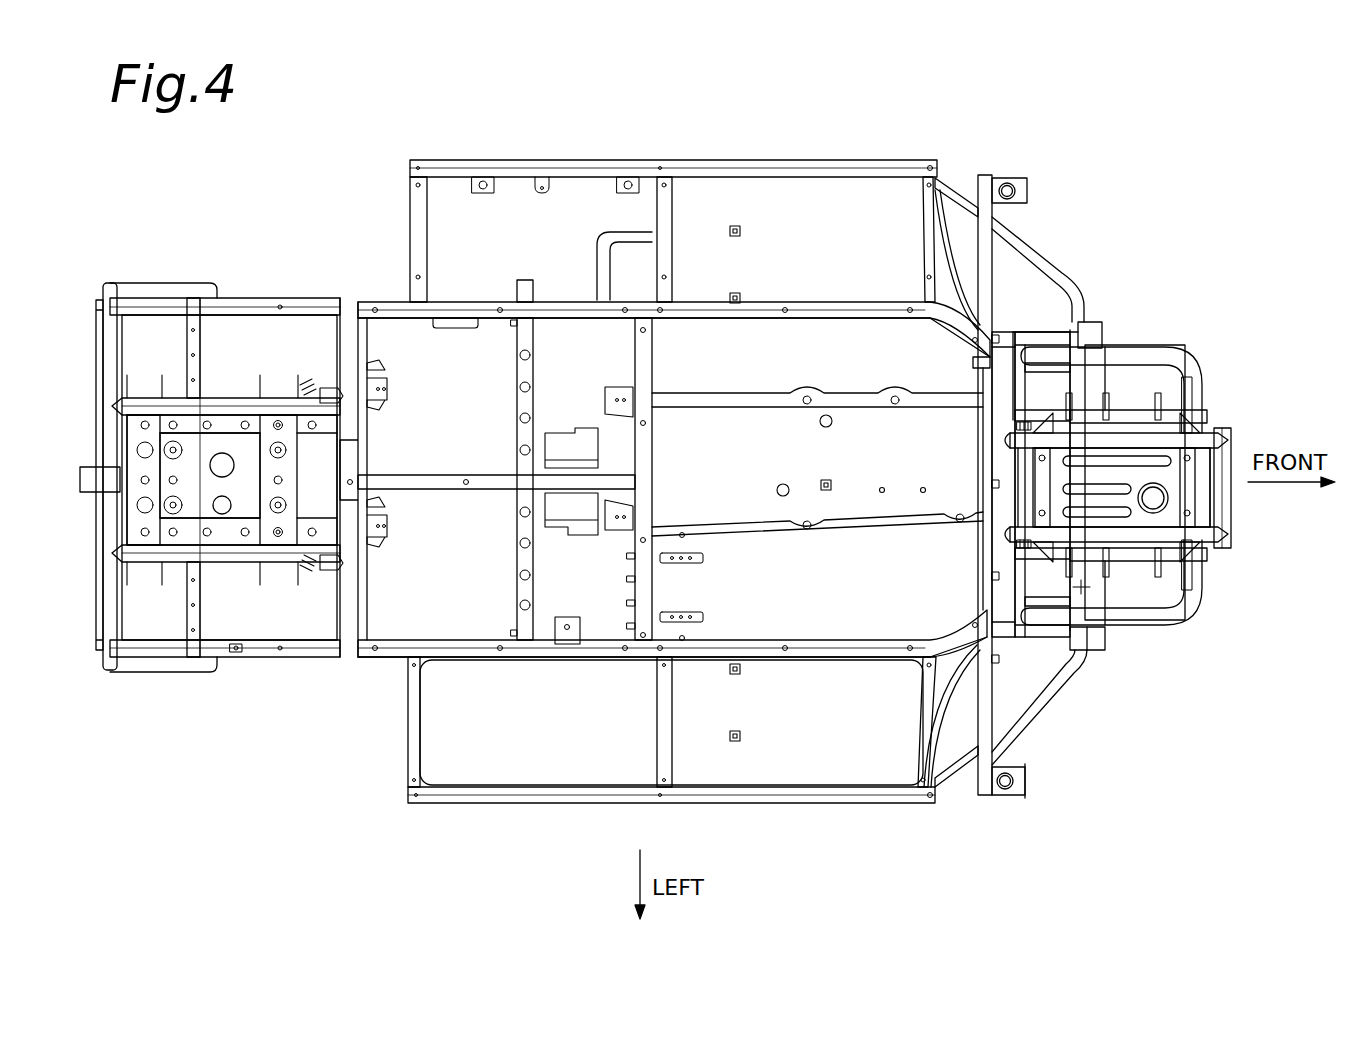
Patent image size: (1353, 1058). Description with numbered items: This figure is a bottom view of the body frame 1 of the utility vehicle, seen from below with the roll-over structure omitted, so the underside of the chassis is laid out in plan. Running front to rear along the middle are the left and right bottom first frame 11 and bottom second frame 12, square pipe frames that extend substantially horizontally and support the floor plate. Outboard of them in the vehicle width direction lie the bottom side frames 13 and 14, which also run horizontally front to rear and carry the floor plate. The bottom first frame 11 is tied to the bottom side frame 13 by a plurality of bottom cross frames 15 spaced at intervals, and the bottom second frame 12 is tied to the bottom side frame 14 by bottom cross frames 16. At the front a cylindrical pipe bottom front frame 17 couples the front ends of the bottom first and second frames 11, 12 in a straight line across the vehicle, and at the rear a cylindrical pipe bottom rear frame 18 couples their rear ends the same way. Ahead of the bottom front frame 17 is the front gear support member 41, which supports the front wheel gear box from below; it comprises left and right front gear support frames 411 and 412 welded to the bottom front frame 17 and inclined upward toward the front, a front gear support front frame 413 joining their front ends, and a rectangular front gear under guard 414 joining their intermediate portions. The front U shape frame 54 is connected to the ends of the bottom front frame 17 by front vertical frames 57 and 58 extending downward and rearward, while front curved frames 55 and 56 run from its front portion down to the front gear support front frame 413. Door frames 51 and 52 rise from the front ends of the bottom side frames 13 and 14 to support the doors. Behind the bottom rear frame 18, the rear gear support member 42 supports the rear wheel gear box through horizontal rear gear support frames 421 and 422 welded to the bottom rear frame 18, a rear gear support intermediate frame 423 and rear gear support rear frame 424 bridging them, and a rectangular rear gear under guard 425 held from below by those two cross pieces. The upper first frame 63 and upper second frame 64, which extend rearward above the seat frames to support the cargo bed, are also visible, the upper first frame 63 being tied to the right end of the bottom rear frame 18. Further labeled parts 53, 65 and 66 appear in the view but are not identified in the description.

The body frame 1 is at (1130, 220).
The bottom first frame 11 is at (487, 305).
The bottom second frame 12 is at (486, 655).
The bottom side frame 13 is at (718, 170).
The bottom side frame 14 is at (572, 797).
The bottom cross frames 15 is at (410, 200).
The bottom cross frames 16 is at (414, 745).
The bottom front frame 17 is at (998, 627).
The bottom rear frame 18 is at (348, 632).
The front gear support member 41 is at (1158, 386).
The front gear support frame 411 is at (1125, 442).
The front gear support frame 412 is at (1104, 500).
The front gear support front frame 413 is at (1229, 450).
The front gear under guard 414 is at (1088, 580).
The rear gear support member 42 is at (235, 372).
The rear gear support frame 421 is at (279, 402).
The rear gear support frame 422 is at (273, 555).
The rear gear support intermediate frame 423 is at (288, 540).
The rear gear support rear frame 424 is at (140, 545).
The rear gear under guard 425 is at (203, 487).
The door frame 51 is at (960, 193).
The door frame 52 is at (960, 773).
The mounting bracket 53 is at (1003, 796).
The front U shape frame 54 is at (1033, 262).
The front curved frame 55 is at (1181, 357).
The front curved frame 56 is at (1183, 622).
The front vertical frame 57 is at (1050, 353).
The front vertical frame 58 is at (1052, 617).
The upper first frame 63 is at (250, 660).
The upper second frame 64 is at (218, 308).
The rear bumper member 65 is at (112, 375).
The rear bracket 66 is at (191, 327).